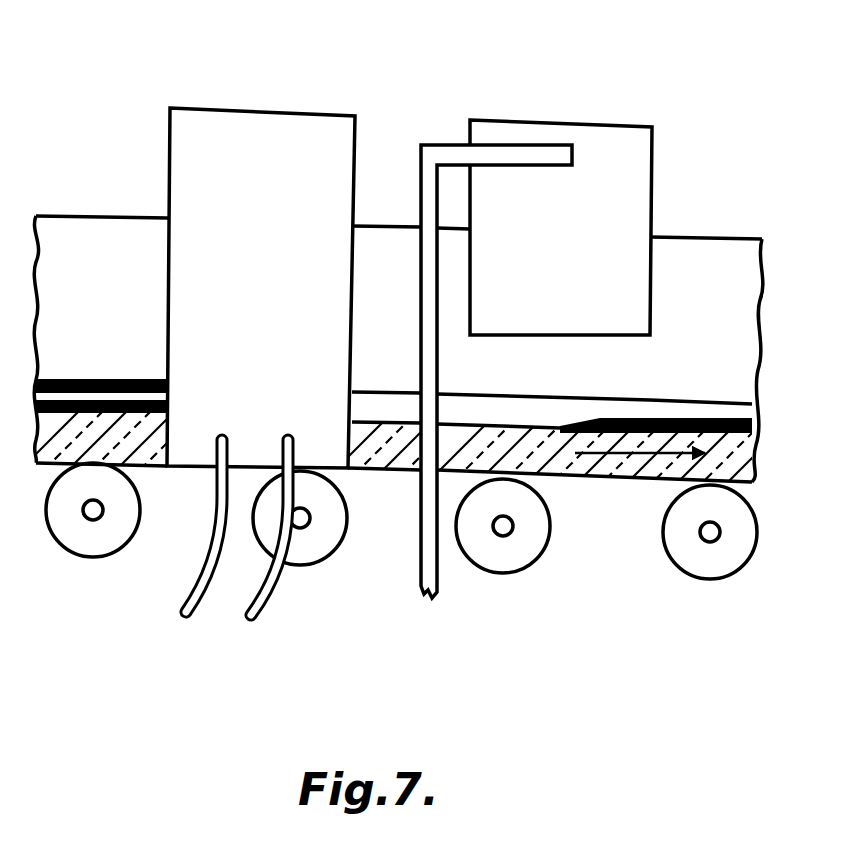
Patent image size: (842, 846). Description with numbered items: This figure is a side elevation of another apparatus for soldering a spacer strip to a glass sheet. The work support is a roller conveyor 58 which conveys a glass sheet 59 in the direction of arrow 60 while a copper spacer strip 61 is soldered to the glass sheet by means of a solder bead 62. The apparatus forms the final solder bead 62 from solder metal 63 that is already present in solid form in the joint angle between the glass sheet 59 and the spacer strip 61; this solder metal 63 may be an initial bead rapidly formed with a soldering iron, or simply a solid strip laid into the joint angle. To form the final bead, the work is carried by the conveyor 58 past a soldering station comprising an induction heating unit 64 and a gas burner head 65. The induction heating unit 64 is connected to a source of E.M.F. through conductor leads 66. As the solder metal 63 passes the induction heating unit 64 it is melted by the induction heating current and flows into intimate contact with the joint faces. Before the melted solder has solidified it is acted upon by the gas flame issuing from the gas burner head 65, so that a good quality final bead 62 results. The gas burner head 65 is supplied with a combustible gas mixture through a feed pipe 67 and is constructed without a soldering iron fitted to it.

The roller conveyor 58 is at (48, 548).
The glass sheet 59 is at (583, 465).
The arrow 60 is at (640, 465).
The spacer strip 61 is at (72, 250).
The solder bead 62 is at (687, 392).
The solder metal 63 is at (125, 372).
The induction heating unit 64 is at (256, 145).
The gas burner head 65 is at (587, 145).
The conductor leads 66 is at (250, 607).
The feed pipe 67 is at (418, 548).